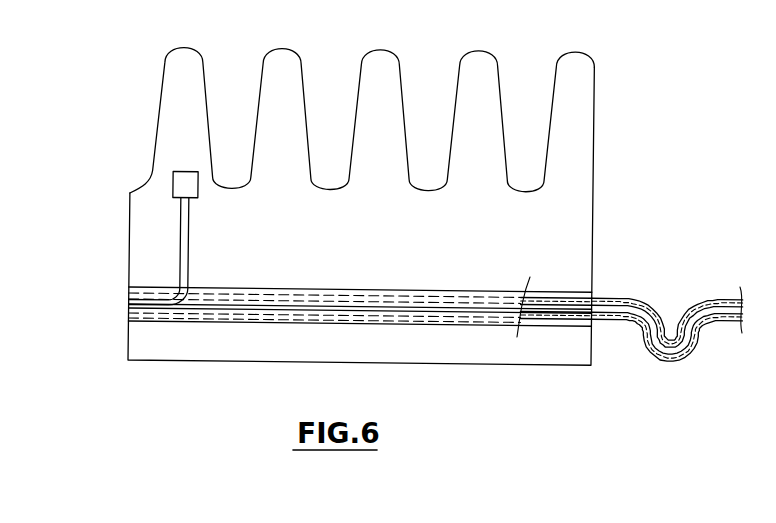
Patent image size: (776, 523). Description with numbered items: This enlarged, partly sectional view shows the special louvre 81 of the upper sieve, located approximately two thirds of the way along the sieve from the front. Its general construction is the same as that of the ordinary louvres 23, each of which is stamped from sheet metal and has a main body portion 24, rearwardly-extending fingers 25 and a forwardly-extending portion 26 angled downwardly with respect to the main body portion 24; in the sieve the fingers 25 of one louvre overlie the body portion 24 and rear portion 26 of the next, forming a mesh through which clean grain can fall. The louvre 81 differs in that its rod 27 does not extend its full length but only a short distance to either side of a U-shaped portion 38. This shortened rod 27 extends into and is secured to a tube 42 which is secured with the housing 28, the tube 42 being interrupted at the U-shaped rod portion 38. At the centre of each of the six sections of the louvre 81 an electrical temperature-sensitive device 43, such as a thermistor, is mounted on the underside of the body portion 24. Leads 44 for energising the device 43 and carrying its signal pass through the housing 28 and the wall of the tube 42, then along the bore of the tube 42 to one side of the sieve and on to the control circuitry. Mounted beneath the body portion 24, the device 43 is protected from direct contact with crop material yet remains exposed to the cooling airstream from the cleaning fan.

The louvre 23 is at (437, 240).
The main body portion 24 is at (360, 298).
The rearwardly-extending fingers 25 is at (362, 122).
The forwardly-extending portion 26 is at (361, 213).
The rod 27 is at (631, 322).
The housing 28 is at (359, 317).
The U-shaped portion 38 is at (666, 340).
The tube 42 is at (631, 335).
The temperature-sensitive device 43 is at (185, 184).
The leads 44 is at (159, 251).
The special louvre 81 is at (362, 122).